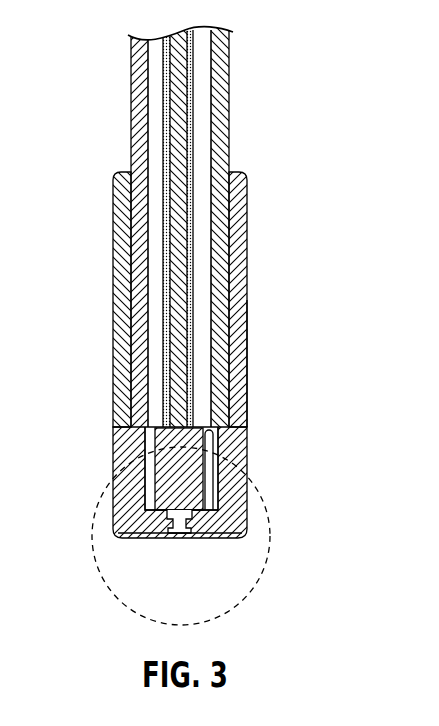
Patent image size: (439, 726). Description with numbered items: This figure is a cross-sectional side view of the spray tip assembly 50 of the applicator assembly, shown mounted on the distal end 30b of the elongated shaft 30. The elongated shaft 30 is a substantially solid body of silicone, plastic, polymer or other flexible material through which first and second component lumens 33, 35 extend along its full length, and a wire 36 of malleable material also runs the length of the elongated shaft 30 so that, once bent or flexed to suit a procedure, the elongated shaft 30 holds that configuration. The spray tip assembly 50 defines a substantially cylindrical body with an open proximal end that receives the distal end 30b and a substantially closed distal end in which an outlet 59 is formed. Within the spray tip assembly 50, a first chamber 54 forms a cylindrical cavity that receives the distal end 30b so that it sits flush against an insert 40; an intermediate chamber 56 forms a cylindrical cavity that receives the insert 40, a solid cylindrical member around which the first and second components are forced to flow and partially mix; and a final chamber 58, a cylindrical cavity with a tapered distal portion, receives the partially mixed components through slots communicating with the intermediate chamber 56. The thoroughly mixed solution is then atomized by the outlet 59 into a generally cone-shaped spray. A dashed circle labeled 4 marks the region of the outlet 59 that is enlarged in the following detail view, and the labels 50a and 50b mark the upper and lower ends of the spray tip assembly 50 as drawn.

The detail region shown in FIG. 4 is at (108, 484).
The elongated shaft 30 is at (186, 225).
The distal end of elongated shaft 30b is at (229, 107).
The first component lumen 33 is at (148, 232).
The second component lumen 35 is at (211, 228).
The wire 36 is at (180, 107).
The insert 40 is at (210, 453).
The spray tip assembly 50 is at (188, 365).
The upper end of sleeve 50a is at (247, 186).
The lower end of sleeve 50b is at (118, 533).
The first chamber 54 is at (247, 386).
The intermediate chamber 56 is at (215, 441).
The final chamber 58 is at (170, 530).
The outlet 59 is at (190, 546).